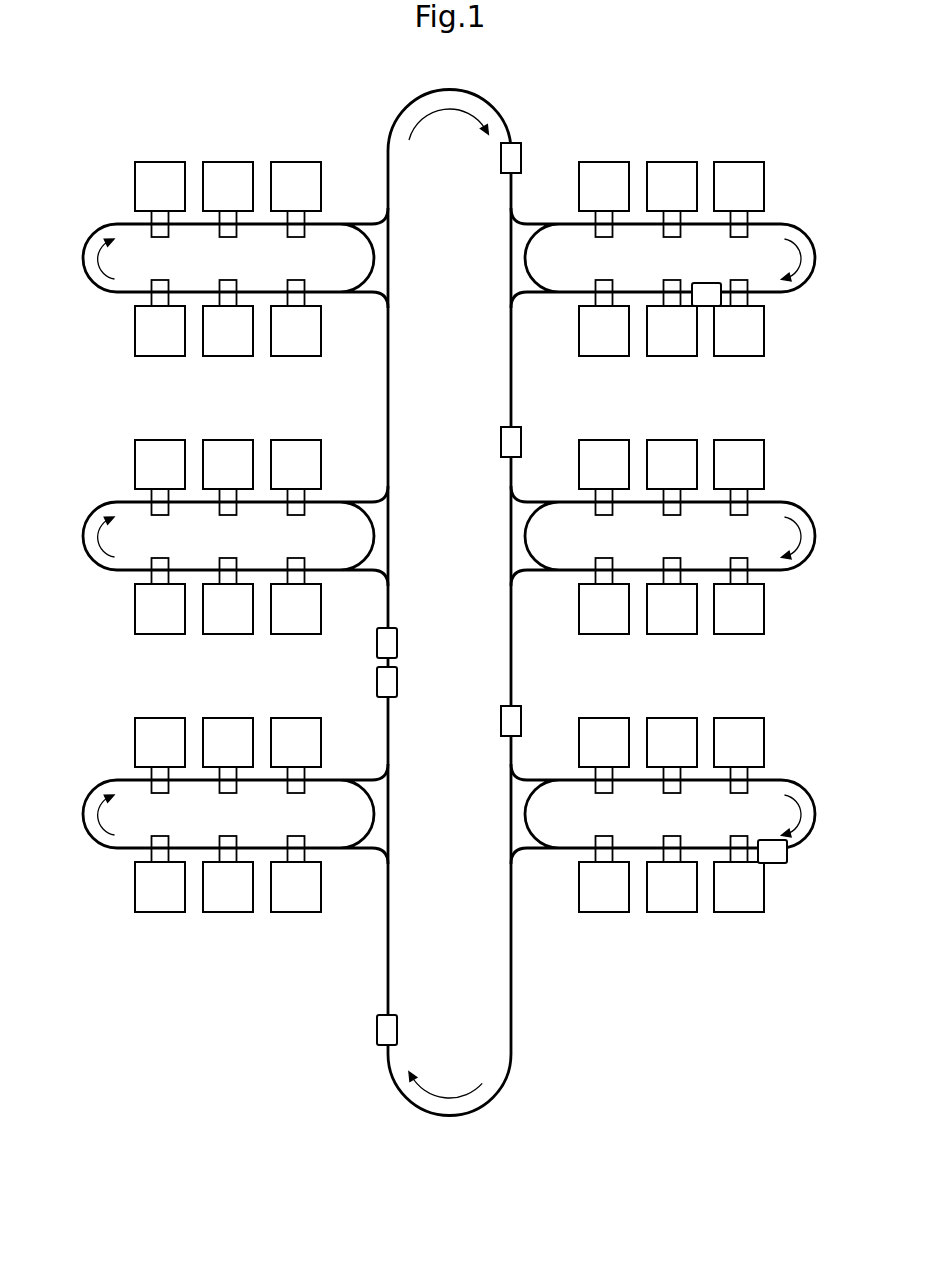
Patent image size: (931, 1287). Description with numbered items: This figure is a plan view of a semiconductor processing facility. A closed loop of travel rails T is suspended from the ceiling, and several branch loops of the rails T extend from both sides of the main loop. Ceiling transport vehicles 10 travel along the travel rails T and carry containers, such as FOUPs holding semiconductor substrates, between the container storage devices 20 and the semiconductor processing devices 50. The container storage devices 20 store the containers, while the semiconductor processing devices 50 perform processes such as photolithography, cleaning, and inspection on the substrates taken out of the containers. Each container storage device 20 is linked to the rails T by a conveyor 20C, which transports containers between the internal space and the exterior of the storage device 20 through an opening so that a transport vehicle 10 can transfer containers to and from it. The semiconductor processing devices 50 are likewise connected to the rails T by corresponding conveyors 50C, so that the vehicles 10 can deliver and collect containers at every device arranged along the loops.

The travel rails T is at (400, 120).
The ceiling transport vehicle 10 is at (501, 165).
The container storage device 20 is at (290, 162).
The conveyor 20C is at (292, 237).
The semiconductor processing device 50 is at (158, 356).
The processing device connection 50C is at (670, 280).